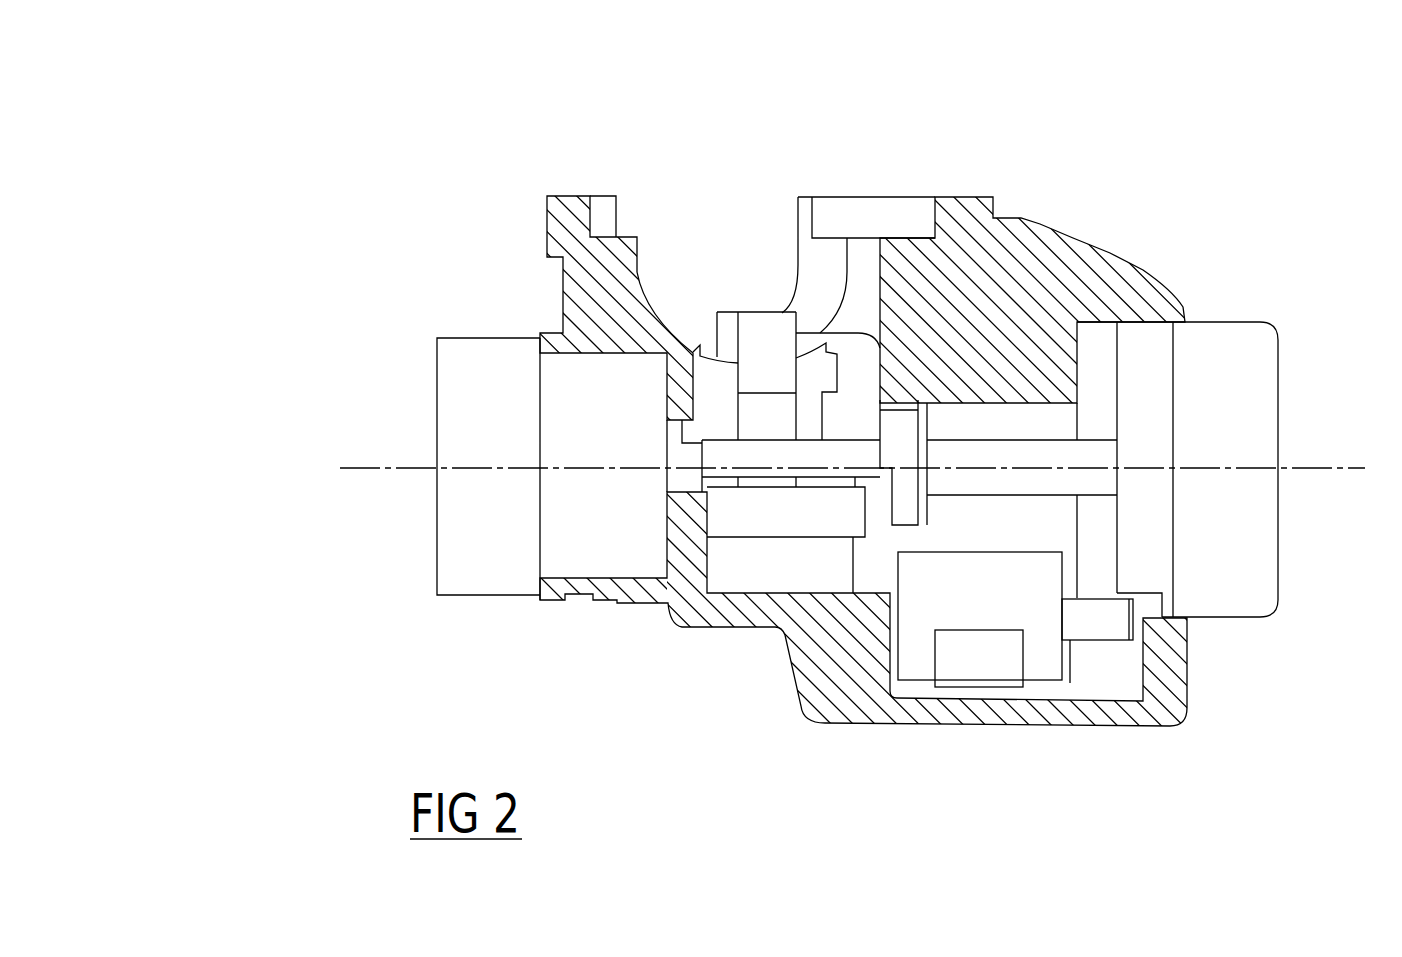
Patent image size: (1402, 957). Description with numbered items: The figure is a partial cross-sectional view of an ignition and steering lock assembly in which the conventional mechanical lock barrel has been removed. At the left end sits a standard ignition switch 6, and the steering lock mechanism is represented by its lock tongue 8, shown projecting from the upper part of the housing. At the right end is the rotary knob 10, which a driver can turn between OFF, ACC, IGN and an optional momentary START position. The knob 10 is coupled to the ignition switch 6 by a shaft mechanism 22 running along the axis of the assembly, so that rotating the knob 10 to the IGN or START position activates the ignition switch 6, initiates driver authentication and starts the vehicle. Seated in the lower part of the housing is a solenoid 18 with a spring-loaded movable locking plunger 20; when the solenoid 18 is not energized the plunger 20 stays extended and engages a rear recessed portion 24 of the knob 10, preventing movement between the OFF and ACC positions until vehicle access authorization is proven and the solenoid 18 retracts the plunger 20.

The ignition switch 6 is at (452, 519).
The lock tongue 8 is at (724, 250).
The rotary knob 10 is at (1208, 352).
The solenoid 18 is at (915, 688).
The locking plunger 20 is at (1108, 666).
The shaft mechanism 22 is at (978, 511).
The rear recessed portion 24 is at (1150, 612).